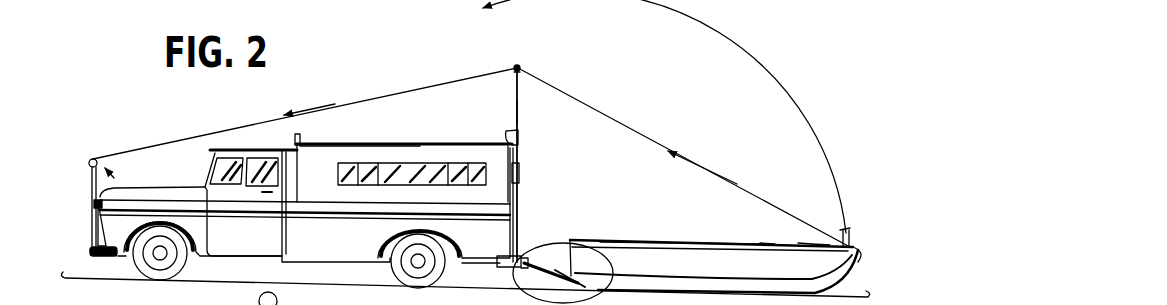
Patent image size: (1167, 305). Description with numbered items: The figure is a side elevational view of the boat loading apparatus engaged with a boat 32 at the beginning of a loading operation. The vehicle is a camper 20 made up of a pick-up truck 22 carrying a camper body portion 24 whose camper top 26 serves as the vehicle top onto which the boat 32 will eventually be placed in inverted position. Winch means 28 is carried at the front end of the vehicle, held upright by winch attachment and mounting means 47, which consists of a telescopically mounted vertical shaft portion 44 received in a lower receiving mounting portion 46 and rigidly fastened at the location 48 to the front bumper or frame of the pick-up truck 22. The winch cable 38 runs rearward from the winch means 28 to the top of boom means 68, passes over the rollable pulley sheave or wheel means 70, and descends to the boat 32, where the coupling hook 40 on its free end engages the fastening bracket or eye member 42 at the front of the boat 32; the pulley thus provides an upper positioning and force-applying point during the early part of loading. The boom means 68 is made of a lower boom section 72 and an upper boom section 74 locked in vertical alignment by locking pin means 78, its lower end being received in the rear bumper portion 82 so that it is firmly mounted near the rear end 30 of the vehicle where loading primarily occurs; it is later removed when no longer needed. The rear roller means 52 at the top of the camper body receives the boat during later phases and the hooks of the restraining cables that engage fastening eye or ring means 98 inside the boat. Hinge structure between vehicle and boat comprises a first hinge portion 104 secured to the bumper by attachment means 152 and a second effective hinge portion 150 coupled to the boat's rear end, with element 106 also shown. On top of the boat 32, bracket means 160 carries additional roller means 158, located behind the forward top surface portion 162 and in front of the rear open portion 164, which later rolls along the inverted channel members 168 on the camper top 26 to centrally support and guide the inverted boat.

The camper 20 is at (237, 110).
The pick-up truck 22 is at (300, 218).
The camper body portion 24 is at (328, 160).
The camper top 26 is at (455, 147).
The winch means 28 is at (104, 144).
The rear end 30 is at (582, 125).
The boat 32 is at (715, 266).
The winch cable 38 is at (661, 141).
The coupling hook 40 is at (839, 230).
The fastening bracket or eye member 42 is at (847, 240).
The vertical shaft portion 44 is at (92, 172).
The lower receiving mounting portion 46 is at (93, 236).
The winch attachment and mounting means 47 is at (90, 205).
The fastening location 48 is at (84, 258).
The rear roller means 52 is at (303, 137).
The boom means 68 is at (523, 101).
The pulley sheave or wheel means 70 is at (514, 73).
The lower boom section 72 is at (522, 114).
The upper boom section 74 is at (518, 204).
The locking pin means 78 is at (519, 171).
The rear bumper portion 82 is at (522, 262).
The fastening eye or ring means 98 is at (320, 300).
The first hinge portion 104 is at (192, 300).
The trailer axle 106 is at (226, 297).
The second effective hinge portion 150 is at (270, 292).
The attachment means 152 is at (126, 288).
The additional roller means 158 is at (768, 241).
The bracket means 160 is at (819, 232).
The forward top surface portion 162 is at (805, 237).
The rear open portion 164 is at (690, 208).
The inverted channel members 168 is at (426, 145).